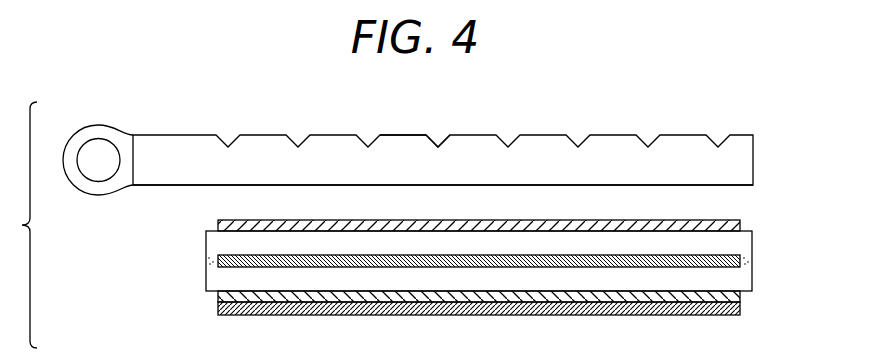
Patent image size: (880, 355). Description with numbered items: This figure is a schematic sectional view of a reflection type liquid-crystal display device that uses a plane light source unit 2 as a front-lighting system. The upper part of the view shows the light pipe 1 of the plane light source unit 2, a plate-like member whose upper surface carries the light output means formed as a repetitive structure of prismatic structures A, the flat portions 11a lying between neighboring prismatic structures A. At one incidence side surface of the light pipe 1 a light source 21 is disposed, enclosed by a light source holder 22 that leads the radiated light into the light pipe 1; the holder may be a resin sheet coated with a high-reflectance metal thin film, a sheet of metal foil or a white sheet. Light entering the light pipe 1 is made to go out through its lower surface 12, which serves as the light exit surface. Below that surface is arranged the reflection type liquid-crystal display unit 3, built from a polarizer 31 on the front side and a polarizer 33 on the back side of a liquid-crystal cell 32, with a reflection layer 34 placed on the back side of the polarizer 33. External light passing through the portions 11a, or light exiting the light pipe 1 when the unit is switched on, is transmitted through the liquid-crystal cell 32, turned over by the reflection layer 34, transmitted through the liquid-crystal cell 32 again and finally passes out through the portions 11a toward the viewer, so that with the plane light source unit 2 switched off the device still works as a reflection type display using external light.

The light pipe 1 is at (748, 114).
The plane light source unit 2 is at (222, 102).
The portions between the light output means 11a is at (396, 135).
The prismatic structures A is at (436, 135).
The lower surface 12 is at (733, 186).
The light source 21 is at (98, 158).
The light source holder 22 is at (98, 196).
The reflection type liquid-crystal display unit 3 is at (135, 213).
The polarizer 31 is at (218, 222).
The liquid-crystal cell 32 is at (210, 245).
The polarizer 33 is at (218, 297).
The reflection layer 34 is at (218, 311).